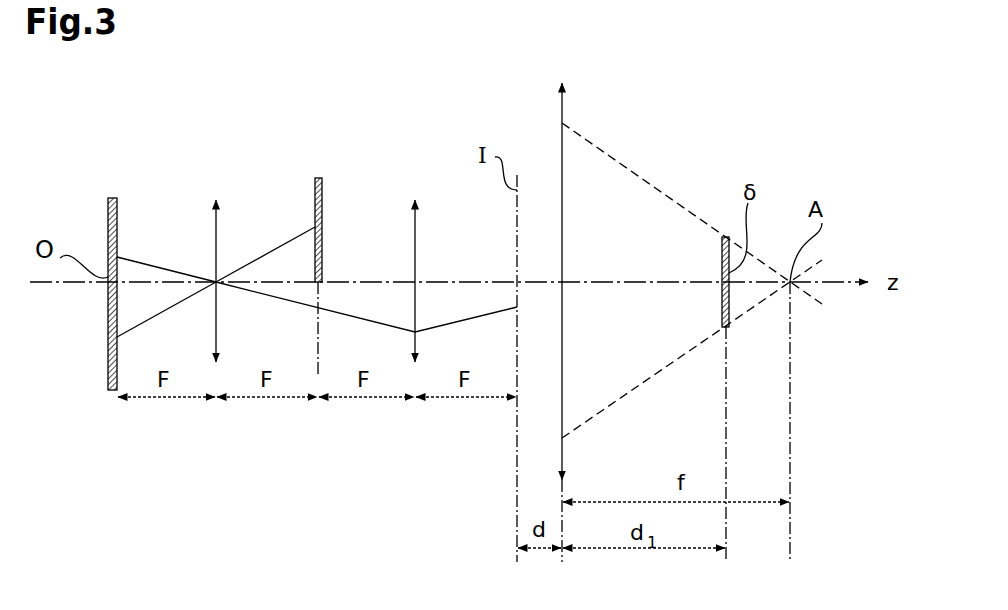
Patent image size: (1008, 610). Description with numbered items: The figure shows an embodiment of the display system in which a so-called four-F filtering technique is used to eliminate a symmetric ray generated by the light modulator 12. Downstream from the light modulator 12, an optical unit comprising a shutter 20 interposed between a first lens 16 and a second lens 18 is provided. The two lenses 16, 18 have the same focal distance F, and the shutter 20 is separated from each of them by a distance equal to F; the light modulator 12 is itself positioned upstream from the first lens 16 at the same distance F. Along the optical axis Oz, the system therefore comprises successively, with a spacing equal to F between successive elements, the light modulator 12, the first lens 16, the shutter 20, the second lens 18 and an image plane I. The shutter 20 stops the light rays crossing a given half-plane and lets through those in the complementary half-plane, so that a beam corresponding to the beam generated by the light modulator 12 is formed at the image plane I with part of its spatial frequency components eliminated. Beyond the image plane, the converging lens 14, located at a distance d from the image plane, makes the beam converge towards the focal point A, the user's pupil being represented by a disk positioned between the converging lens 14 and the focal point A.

The light modulator 12 is at (108, 228).
The converging lens 14 is at (562, 110).
The first lens 16 is at (216, 237).
The second lens 18 is at (415, 242).
The shutter 20 is at (322, 212).